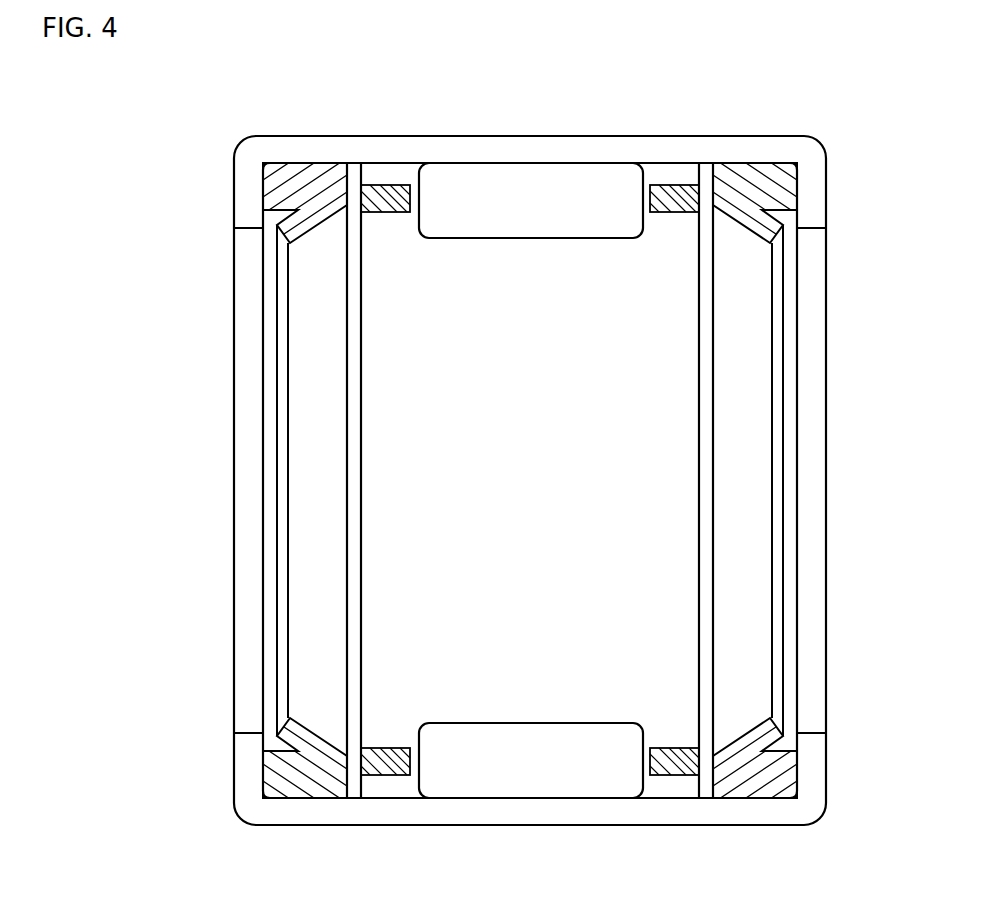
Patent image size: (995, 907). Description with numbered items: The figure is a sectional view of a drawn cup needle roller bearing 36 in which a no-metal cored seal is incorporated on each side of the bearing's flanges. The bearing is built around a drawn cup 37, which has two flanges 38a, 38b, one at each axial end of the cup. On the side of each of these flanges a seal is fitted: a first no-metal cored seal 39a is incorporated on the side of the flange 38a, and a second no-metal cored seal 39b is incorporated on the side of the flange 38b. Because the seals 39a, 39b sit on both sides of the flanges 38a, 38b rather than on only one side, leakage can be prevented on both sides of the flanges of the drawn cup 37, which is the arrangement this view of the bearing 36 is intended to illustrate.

The drawn cup needle roller bearing 36 is at (802, 94).
The drawn cup 37 is at (540, 150).
The flange 38a is at (810, 198).
The flange 38b is at (250, 200).
The no-metal cored seal 39a is at (759, 186).
The no-metal cored seal 39b is at (300, 186).